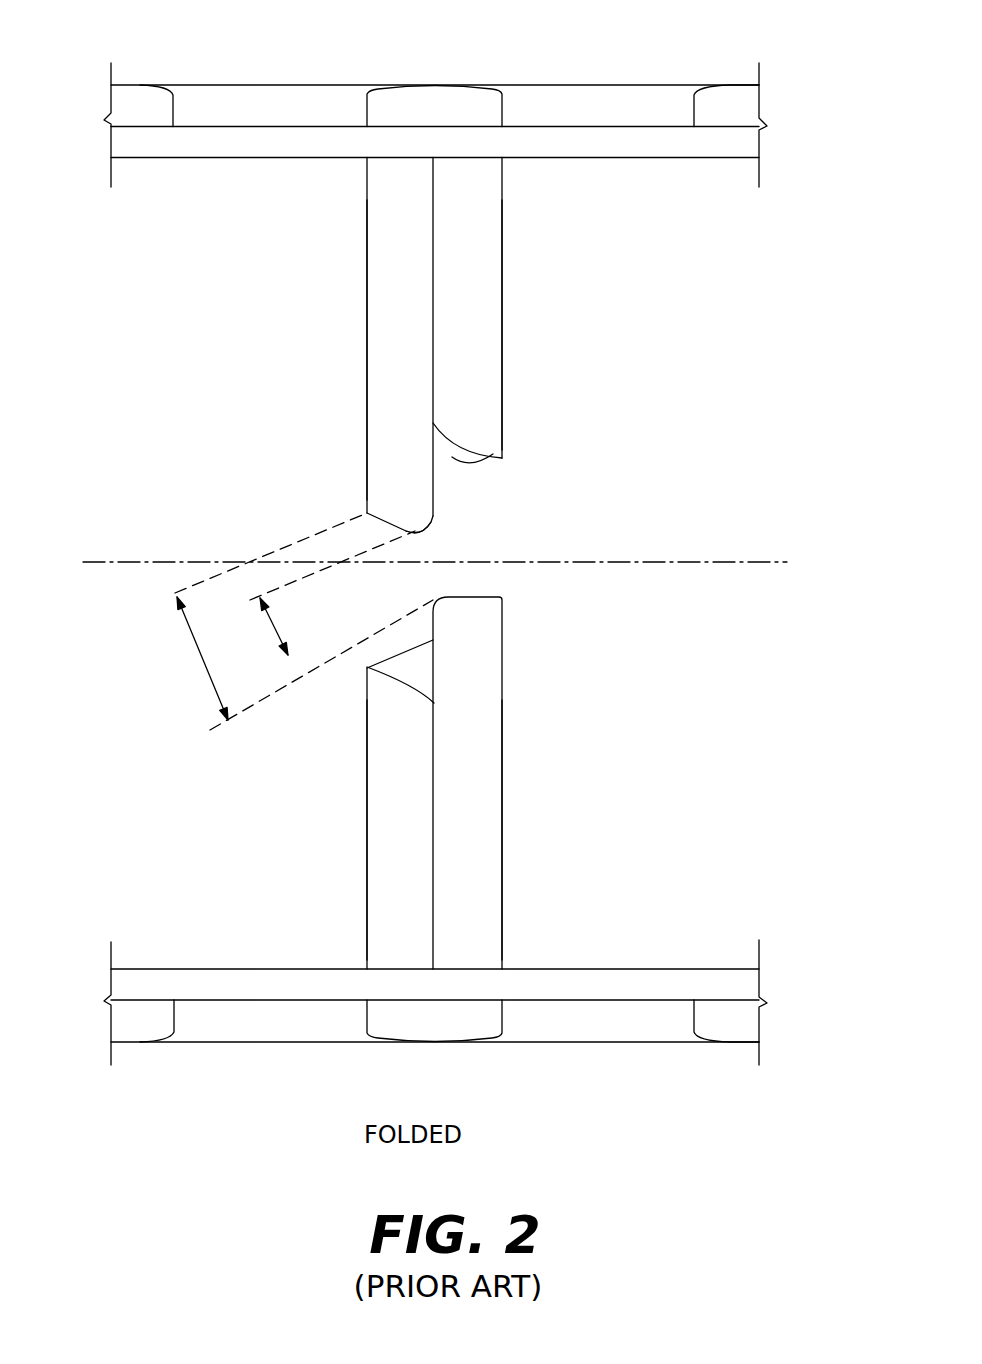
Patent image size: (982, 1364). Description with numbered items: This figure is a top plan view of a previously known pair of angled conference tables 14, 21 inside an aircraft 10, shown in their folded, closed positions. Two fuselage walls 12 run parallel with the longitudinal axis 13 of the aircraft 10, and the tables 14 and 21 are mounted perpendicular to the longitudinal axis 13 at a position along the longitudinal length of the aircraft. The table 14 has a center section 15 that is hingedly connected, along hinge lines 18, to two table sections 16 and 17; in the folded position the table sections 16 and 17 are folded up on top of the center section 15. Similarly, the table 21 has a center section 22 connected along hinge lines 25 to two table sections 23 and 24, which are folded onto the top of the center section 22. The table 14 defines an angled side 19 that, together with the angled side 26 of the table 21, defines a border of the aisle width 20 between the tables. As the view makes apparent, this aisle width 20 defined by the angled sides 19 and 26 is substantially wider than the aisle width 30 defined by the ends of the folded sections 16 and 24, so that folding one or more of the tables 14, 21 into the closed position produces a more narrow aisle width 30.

The aircraft 10 is at (195, 376).
The fuselage walls 12 is at (243, 98).
The longitudinal axis 13 is at (650, 562).
The angled conference table 14 is at (441, 345).
The center section 15 is at (433, 488).
The table section 16 is at (383, 247).
The table section 17 is at (483, 243).
The hinge lines 18 is at (367, 315).
The angled side 19 is at (462, 478).
The aisle width 20 is at (202, 663).
The angled conference table 21 is at (428, 772).
The center section 22 is at (407, 670).
The table section 23 is at (398, 778).
The table section 24 is at (475, 680).
The hinge lines 25 is at (367, 845).
The angled side 26 is at (433, 640).
The aisle width 30 is at (274, 616).